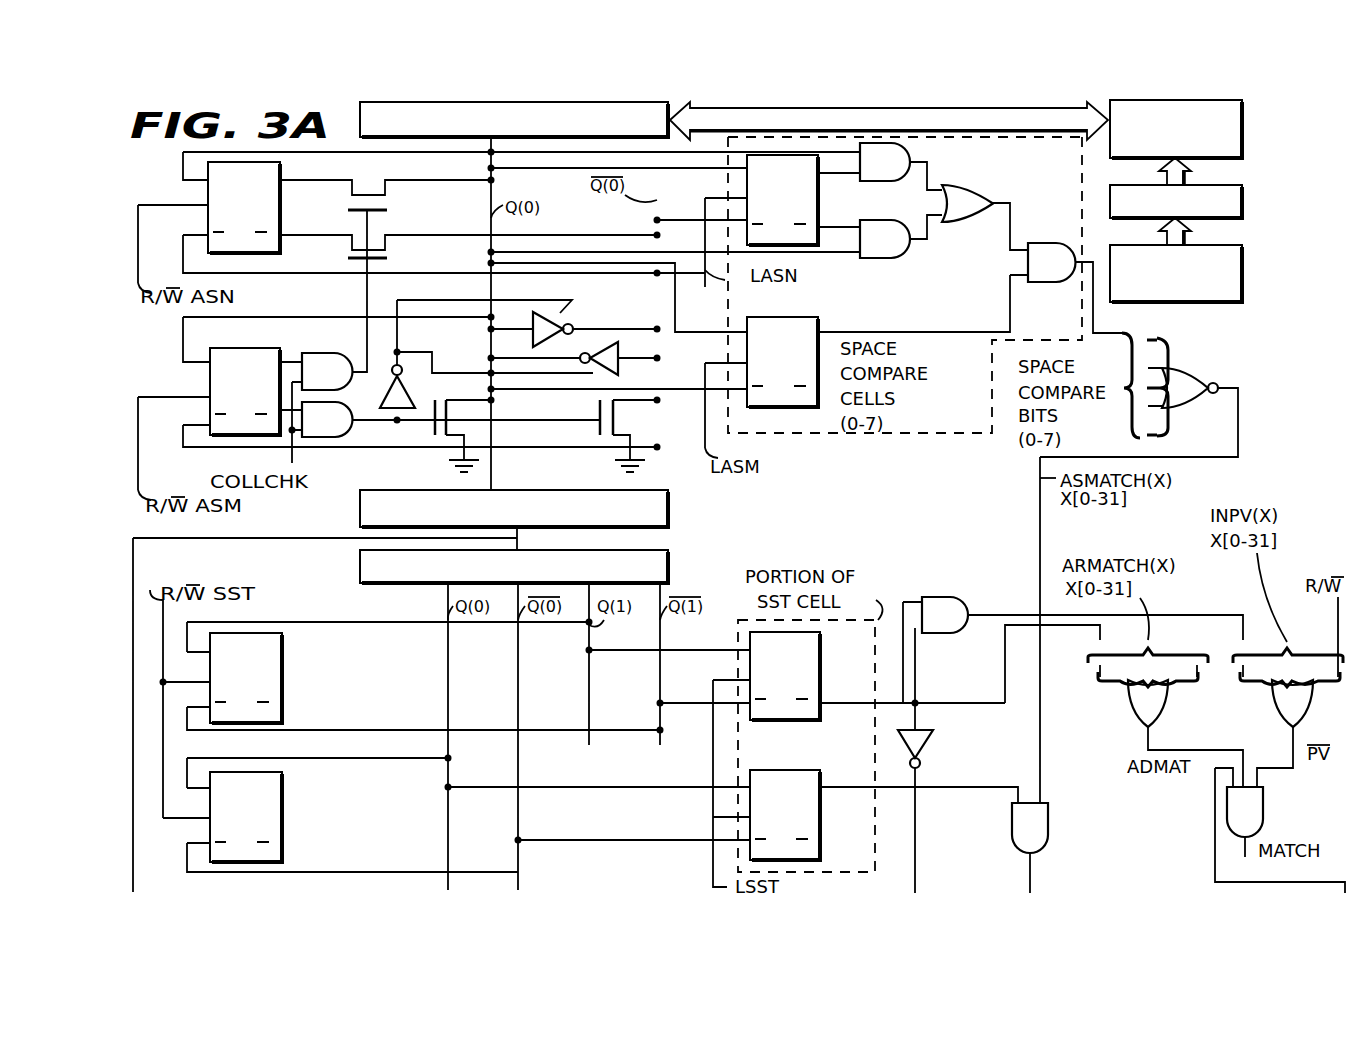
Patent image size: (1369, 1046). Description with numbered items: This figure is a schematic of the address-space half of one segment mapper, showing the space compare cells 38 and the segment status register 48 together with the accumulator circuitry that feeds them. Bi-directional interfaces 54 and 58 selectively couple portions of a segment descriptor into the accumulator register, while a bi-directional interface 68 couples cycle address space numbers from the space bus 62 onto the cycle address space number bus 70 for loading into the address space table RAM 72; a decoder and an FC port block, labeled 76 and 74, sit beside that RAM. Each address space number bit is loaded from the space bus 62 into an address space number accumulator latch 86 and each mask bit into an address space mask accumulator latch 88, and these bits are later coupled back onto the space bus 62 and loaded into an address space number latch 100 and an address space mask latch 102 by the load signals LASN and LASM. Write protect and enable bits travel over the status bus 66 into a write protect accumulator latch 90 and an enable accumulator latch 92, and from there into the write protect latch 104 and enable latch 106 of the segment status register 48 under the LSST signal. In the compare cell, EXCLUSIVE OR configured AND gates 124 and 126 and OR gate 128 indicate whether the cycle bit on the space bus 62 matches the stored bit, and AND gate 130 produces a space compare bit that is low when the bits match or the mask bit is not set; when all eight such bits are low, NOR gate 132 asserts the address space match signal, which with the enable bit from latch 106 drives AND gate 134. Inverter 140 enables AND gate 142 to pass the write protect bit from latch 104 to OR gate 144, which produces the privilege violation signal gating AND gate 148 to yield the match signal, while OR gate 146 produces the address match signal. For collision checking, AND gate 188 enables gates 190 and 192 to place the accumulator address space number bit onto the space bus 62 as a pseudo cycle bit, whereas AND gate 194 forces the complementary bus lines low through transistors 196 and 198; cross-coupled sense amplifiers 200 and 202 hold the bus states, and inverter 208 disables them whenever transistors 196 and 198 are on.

The space compare cells 38 is at (848, 433).
The segment status (SST) register 48 is at (878, 828).
The bi-directional interface 54 is at (672, 498).
The bi-directional interface 58 is at (672, 556).
The space bus 62 is at (478, 163).
The status bus 66 is at (432, 601).
The bi-directional interface 68 is at (385, 140).
The cycle address space number (CASN) bus 70 is at (1028, 138).
The address space table (AST) RAM 72 is at (1245, 128).
The FC port 74 is at (1245, 283).
The decoder 76 is at (1245, 208).
The address space number accumulator (ASN AC) latch 86 is at (282, 198).
The address space mask accumulator (ASM AC) latch 88 is at (233, 343).
The write protect accumulator (WP AC) latch 90 is at (285, 683).
The enable accumulator (E AC) latch 92 is at (285, 820).
The address space number (ASN) latch 100 is at (820, 210).
The address space mask (ASM) latch 102 is at (807, 317).
The write protect (WP) latch 104 is at (822, 660).
The enable (E) latch 106 is at (788, 770).
The AND gate 124 is at (905, 147).
The AND gate 126 is at (895, 257).
The OR gate 128 is at (985, 187).
The AND gate 130 is at (1063, 293).
The NOR gate 132 is at (1182, 360).
The AND gate 134 is at (1048, 823).
The inverter 140 is at (930, 743).
The AND gate 142 is at (943, 594).
The OR gate 144 is at (1273, 713).
The OR gate 146 is at (1130, 700).
The AND gate 148 is at (1263, 810).
The AND gate 188 is at (340, 353).
The gate 190 is at (388, 190).
The gate 192 is at (388, 242).
The AND gate 194 is at (347, 430).
The transistor 196 is at (478, 377).
The transistor 198 is at (593, 425).
The cross-coupled sense amplifier 200 is at (553, 322).
The cross-coupled sense amplifier 202 is at (627, 352).
The inverter 208 is at (415, 377).